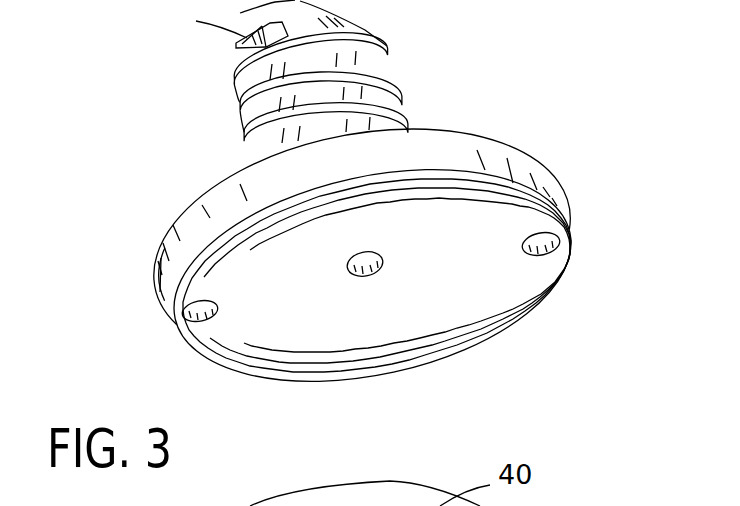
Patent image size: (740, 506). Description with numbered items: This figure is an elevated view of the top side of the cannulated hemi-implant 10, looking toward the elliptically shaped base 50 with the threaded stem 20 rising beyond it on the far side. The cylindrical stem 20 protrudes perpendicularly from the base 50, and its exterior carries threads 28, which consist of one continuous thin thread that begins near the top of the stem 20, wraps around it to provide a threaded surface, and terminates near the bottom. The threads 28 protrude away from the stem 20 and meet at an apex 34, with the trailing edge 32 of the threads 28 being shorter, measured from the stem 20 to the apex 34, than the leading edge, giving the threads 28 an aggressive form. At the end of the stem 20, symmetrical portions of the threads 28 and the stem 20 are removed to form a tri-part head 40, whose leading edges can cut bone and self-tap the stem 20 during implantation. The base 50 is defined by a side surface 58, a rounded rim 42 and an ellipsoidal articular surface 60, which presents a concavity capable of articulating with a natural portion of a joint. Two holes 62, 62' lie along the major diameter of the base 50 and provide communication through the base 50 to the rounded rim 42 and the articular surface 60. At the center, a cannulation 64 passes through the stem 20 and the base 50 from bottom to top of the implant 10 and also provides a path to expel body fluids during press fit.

The implant 10 is at (548, 99).
The stem 20 is at (389, 44).
The threads 28 is at (399, 84).
The trailing edge 32 is at (410, 124).
The apex 34 is at (240, 101).
The tri-part head 40 is at (240, 13).
The rounded rim 42 is at (230, 228).
The base 50 is at (524, 157).
The side surface 58 is at (155, 263).
The ellipsoidal articular surface 60 is at (283, 317).
The hole 62 is at (153, 349).
The hole 62' is at (591, 276).
The cannulation 64 is at (383, 262).